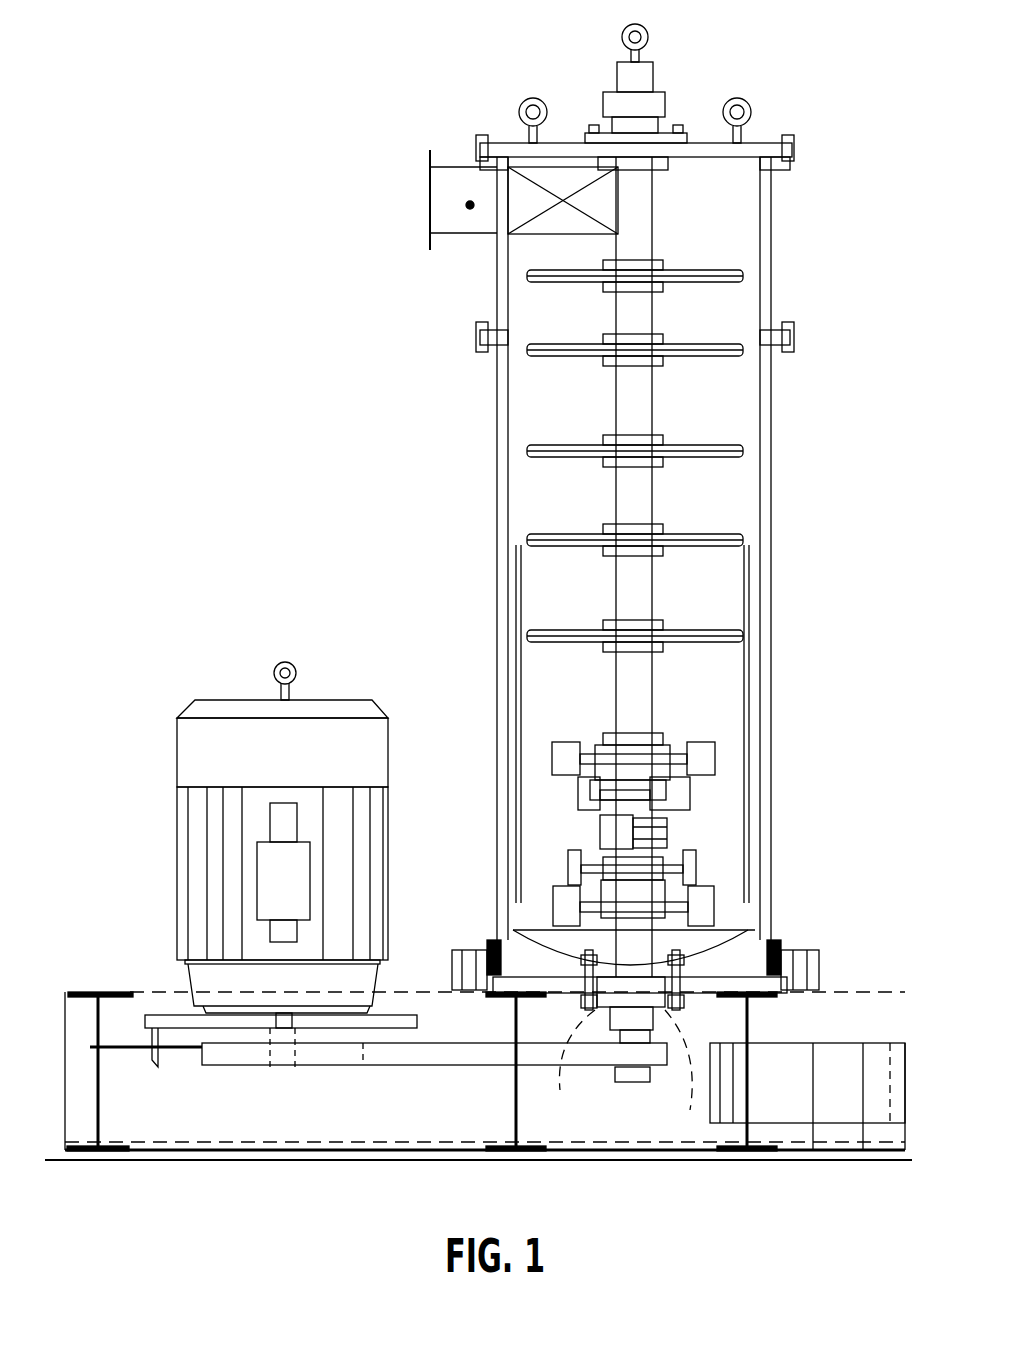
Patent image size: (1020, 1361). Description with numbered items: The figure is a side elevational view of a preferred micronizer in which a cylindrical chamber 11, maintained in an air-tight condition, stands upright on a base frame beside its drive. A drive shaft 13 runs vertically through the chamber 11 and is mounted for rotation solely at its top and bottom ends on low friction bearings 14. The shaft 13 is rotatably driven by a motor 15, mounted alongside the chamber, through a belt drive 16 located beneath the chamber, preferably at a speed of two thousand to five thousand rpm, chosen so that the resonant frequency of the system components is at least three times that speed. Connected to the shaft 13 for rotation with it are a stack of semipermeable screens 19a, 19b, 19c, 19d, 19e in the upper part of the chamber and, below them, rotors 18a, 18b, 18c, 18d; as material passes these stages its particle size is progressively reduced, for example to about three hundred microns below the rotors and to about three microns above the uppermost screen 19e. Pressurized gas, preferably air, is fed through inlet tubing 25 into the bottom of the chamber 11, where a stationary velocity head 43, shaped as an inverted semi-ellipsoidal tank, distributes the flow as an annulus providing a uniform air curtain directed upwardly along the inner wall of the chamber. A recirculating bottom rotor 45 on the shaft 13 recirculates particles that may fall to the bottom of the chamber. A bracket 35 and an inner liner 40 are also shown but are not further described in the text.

The chamber 11 is at (504, 458).
The drive shaft 13 is at (645, 240).
The low friction bearings 14 is at (645, 148).
The motor 15 is at (185, 750).
The belt drive 16 is at (437, 1063).
The rotor 18a is at (707, 762).
The rotor 18b is at (683, 797).
The rotor 18c is at (600, 830).
The rotor 18d is at (573, 868).
The semipermeable screen 19a is at (717, 632).
The semipermeable screen 19b is at (732, 533).
The semipermeable screen 19c is at (727, 443).
The semipermeable screen 19d is at (703, 343).
The semipermeable screen 19e is at (730, 270).
The inlet tubing 25 is at (783, 1058).
The bracket 35 is at (457, 218).
The liner 40 is at (515, 695).
The stationary velocity head 43 is at (717, 940).
The recirculating bottom rotor 45 is at (705, 905).